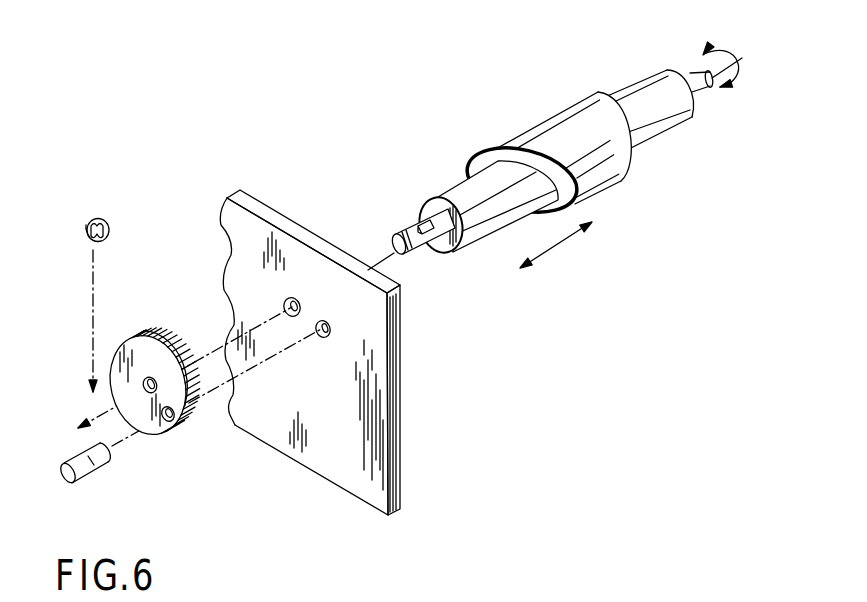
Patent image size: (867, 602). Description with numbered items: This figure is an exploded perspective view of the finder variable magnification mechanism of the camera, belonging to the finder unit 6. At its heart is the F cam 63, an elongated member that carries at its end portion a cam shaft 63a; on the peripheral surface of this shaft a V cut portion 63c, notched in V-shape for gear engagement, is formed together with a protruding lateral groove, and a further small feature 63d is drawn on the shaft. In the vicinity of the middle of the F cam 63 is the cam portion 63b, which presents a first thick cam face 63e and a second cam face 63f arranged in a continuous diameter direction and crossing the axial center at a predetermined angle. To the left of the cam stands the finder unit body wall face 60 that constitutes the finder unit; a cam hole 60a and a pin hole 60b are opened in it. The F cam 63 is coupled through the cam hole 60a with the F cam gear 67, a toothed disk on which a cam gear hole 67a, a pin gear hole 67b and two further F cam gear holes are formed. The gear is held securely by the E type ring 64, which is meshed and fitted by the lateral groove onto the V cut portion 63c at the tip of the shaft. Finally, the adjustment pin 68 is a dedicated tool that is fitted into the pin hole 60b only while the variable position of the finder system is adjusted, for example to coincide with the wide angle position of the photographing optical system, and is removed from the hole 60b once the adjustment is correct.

The finder unit 6 is at (386, 85).
The finder unit body wall face 60 is at (255, 240).
The cam hole 60a is at (290, 317).
The pin hole 60b is at (322, 338).
The F cam 63 is at (548, 173).
The cam shaft 63a is at (437, 222).
The cam portion 63b is at (538, 147).
The V cut portion 63c is at (410, 227).
The shaft notch 63d is at (428, 252).
The first thick cam face 63e is at (476, 158).
The second cam face 63f is at (618, 100).
The E type ring 64 is at (99, 218).
The F cam gear 67 is at (162, 337).
The cam gear hole 67a is at (142, 383).
The pin gear hole 67b is at (169, 422).
The adjustment pin 68 is at (92, 480).